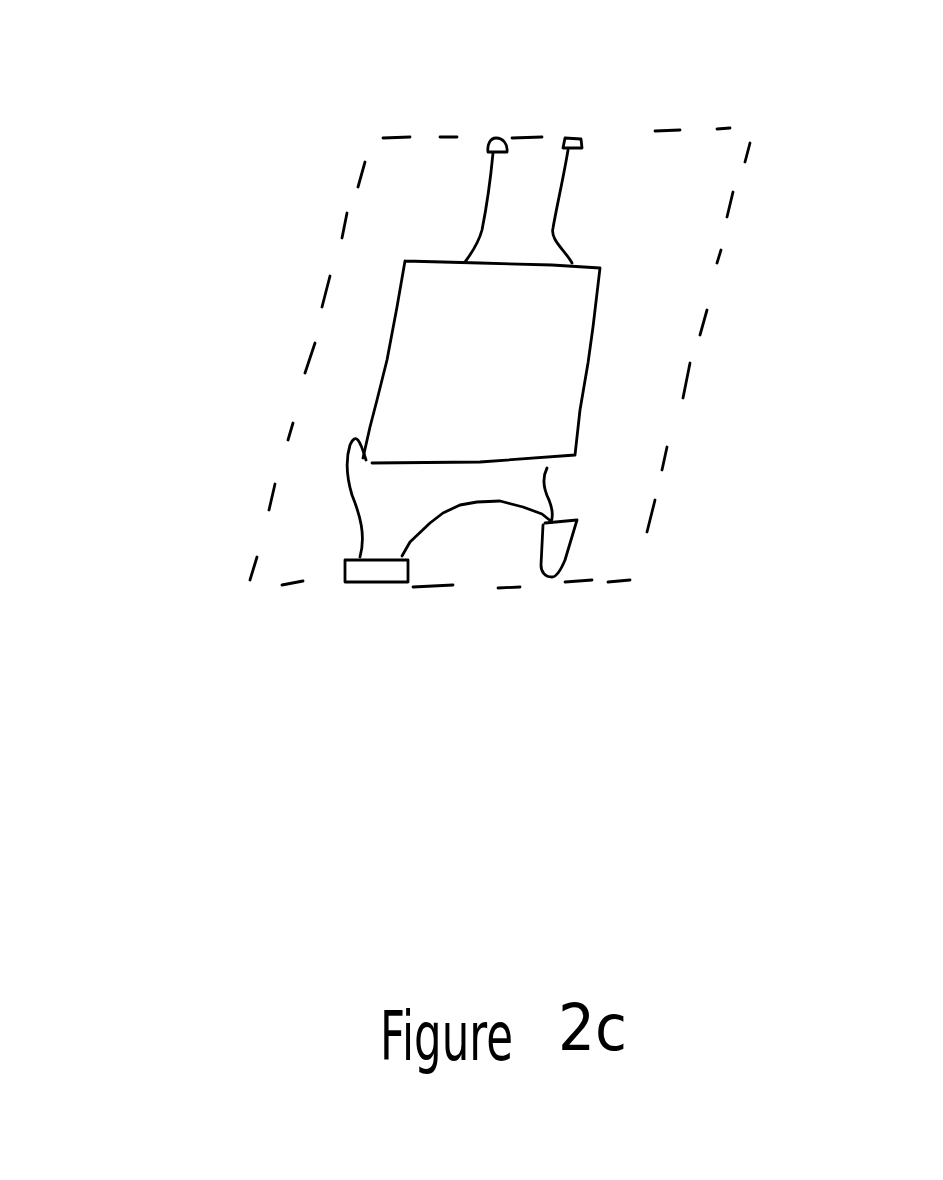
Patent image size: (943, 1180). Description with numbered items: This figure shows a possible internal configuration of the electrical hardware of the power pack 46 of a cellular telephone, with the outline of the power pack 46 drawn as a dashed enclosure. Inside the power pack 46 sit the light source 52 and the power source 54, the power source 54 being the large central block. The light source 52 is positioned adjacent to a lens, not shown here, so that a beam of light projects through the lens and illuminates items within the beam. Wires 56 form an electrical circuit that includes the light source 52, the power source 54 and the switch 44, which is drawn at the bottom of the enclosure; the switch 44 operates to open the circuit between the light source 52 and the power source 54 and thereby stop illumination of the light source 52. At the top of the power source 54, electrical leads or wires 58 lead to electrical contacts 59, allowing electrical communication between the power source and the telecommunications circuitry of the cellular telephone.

The switch 44 is at (383, 582).
The power pack 46 is at (730, 203).
The light source 52 is at (565, 548).
The power source 54 is at (553, 382).
The wires 56 is at (356, 503).
The electrical leads/wires 58 is at (565, 187).
The electrical contacts 59 is at (578, 132).